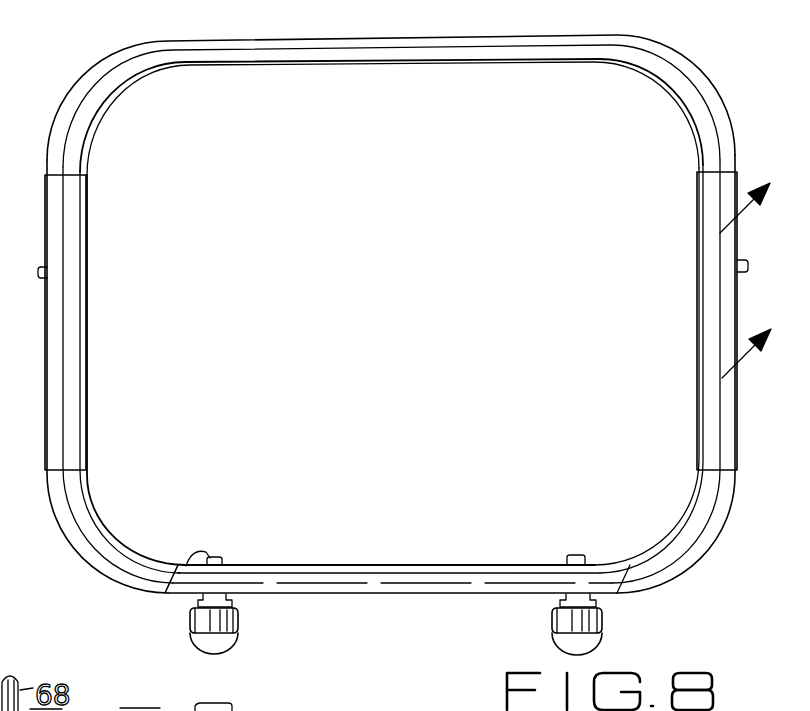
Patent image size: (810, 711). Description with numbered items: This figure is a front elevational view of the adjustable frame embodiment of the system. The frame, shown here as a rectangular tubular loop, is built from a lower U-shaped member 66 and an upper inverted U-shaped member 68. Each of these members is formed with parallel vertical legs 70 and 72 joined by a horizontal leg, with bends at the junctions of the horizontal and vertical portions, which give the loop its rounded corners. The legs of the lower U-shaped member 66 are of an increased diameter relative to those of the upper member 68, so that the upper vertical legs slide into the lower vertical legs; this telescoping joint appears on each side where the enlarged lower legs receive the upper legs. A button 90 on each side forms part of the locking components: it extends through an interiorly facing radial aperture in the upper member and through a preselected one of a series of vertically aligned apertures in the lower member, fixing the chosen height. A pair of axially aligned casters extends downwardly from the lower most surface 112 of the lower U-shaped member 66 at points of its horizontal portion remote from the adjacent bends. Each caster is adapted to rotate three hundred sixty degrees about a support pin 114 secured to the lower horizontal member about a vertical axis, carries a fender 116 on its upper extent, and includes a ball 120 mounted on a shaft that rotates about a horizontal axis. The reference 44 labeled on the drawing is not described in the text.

The tubular frame 44 is at (541, 36).
The lower U-shaped member 66 is at (428, 590).
The upper inverted U-shaped member 68 is at (383, 40).
The vertical leg 70 is at (48, 400).
The vertical leg 72 is at (48, 180).
The button 90 is at (748, 268).
The lower most surface 112 is at (222, 596).
The support pin 114 is at (158, 591).
The fender 116 is at (190, 627).
The ball 120 is at (212, 646).